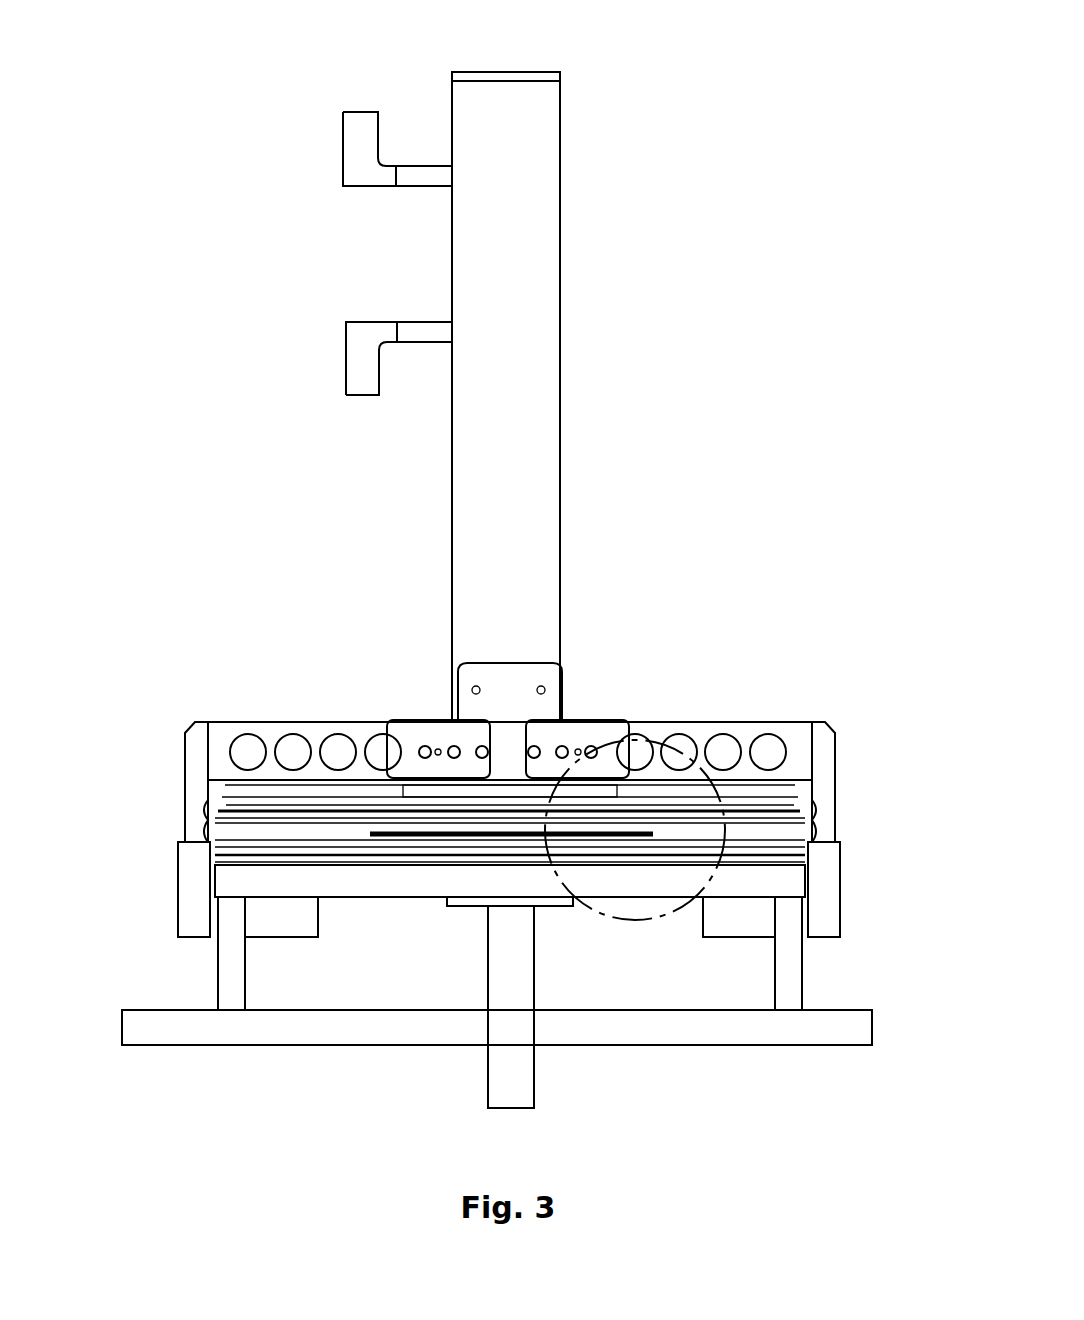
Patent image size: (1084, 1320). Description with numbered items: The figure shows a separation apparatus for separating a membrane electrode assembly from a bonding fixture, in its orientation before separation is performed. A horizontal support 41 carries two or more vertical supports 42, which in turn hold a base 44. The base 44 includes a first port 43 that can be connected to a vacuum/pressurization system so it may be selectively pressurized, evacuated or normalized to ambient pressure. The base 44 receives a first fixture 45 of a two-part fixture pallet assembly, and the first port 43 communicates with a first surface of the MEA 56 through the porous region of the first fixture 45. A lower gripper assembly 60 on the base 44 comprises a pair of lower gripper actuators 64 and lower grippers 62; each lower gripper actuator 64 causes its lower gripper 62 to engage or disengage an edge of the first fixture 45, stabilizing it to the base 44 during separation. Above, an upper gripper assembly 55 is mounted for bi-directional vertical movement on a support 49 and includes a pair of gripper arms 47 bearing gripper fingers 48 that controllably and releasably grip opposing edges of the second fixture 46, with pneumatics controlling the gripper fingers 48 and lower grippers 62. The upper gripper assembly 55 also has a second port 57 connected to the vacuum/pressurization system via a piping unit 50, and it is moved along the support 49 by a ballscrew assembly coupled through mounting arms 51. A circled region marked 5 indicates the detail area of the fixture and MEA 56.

The horizontal support 41 is at (780, 1045).
The vertical supports 42 is at (805, 980).
The first port 43 is at (535, 1075).
The base 44 is at (812, 880).
The first fixture 45 is at (210, 850).
The second fixture 46 is at (212, 828).
The gripper arms 47 is at (312, 720).
The gripper fingers 48 is at (183, 742).
The support 49 is at (562, 497).
The piping unit 50 is at (500, 72).
The mounting arms 51 is at (343, 362).
The upper gripper assembly 55 is at (217, 712).
The MEA 56 is at (385, 836).
The second port 57 is at (508, 797).
The lower gripper assembly 60 is at (180, 950).
The lower grippers 62 is at (830, 920).
The lower gripper actuators 64 is at (748, 928).
The detail circle of FIG. 5 is at (665, 920).